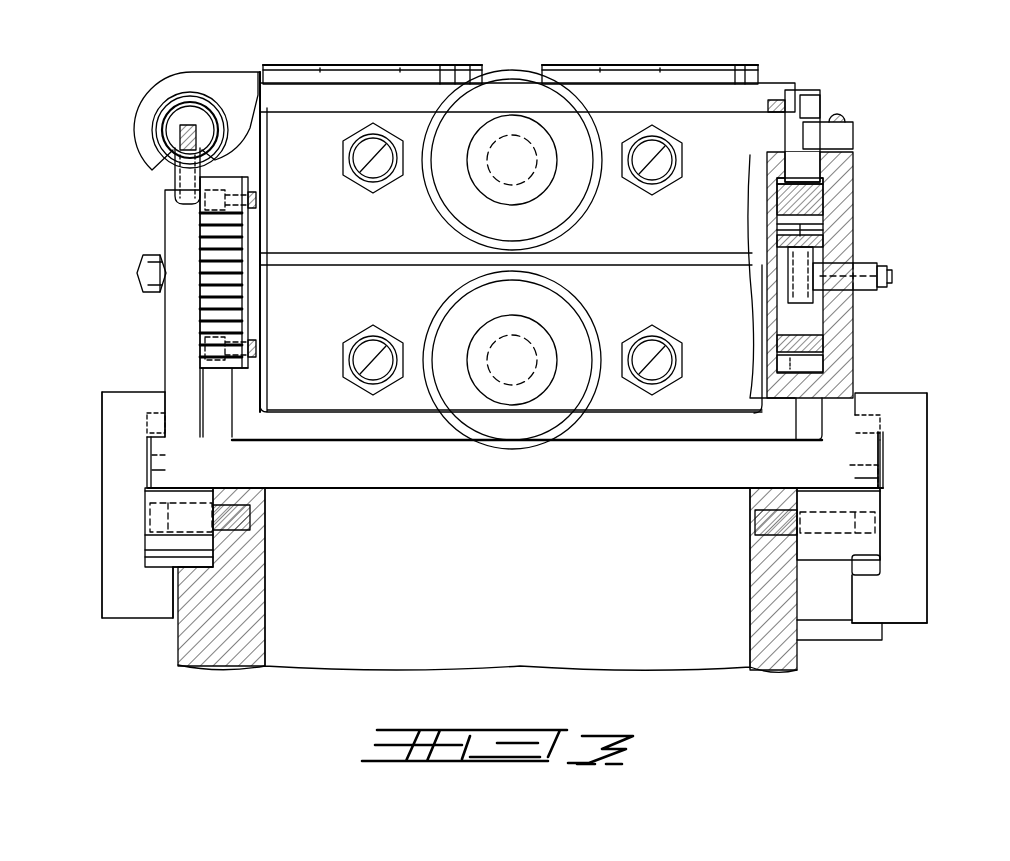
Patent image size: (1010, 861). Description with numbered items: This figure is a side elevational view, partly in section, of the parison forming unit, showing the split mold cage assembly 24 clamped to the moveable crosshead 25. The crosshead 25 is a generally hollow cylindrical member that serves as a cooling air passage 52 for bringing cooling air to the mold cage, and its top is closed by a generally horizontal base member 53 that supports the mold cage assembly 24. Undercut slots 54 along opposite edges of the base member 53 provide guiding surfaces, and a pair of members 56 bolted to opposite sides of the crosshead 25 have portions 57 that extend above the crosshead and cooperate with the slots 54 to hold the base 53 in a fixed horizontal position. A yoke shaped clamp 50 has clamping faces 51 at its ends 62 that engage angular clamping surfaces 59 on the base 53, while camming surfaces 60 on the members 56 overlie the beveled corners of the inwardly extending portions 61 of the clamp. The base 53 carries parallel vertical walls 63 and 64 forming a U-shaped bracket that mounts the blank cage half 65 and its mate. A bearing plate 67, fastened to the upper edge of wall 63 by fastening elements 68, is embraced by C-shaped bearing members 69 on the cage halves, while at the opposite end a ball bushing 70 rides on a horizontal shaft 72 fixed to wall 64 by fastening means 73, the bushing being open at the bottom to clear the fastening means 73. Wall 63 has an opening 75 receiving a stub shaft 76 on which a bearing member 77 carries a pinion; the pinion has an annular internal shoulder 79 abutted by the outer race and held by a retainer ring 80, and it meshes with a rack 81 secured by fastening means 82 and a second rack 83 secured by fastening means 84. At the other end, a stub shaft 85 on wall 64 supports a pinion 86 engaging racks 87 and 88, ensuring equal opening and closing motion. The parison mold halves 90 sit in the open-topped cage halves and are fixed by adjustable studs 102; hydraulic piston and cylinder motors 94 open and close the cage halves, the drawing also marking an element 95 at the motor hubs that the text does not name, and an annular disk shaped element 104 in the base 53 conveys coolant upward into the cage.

The mold cage assembly 24 is at (552, 30).
The crosshead 25 is at (232, 658).
The yoke shaped clamp 50 is at (105, 612).
The clamping faces 51 is at (150, 440).
The cooling air passage 52 is at (501, 601).
The base member 53 is at (608, 476).
The undercut slots 54 is at (152, 458).
The members 56 is at (160, 555).
The portions 57 is at (152, 470).
The angular clamping surfaces 59 is at (145, 418).
The camming surfaces 60 is at (150, 575).
The inwardly extending portions 61 is at (165, 600).
The ends 62 is at (100, 505).
The vertical wall 63 is at (845, 215).
The vertical wall 64 is at (178, 292).
The blank cage half 65 is at (760, 95).
The bearing plate 67 is at (840, 137).
The fastening elements 68 is at (840, 116).
The C-shaped bearing members 69 is at (815, 95).
The ball bushing 70 is at (150, 103).
The shaft 72 is at (176, 120).
The fastening means 73 is at (186, 197).
The opening 75 is at (865, 265).
The stub shaft 76 is at (882, 278).
The bearing member 77 is at (797, 275).
The annular internal shoulder 79 is at (780, 245).
The retainer ring 80 is at (820, 240).
The rack 81 is at (820, 183).
The fastening means 82 is at (815, 205).
The second rack 83 is at (830, 370).
The fastening means 84 is at (810, 350).
The stub shaft 85 is at (140, 272).
The pinion 86 is at (212, 265).
The rack 87 is at (210, 330).
The rack 88 is at (212, 224).
The parison mold halves 90 is at (470, 62).
The hydraulic piston and cylinder motors 94 is at (552, 300).
The roller hub 95 is at (510, 162).
The adjustable studs 102 is at (360, 172).
The annular disk shaped element 104 is at (372, 441).